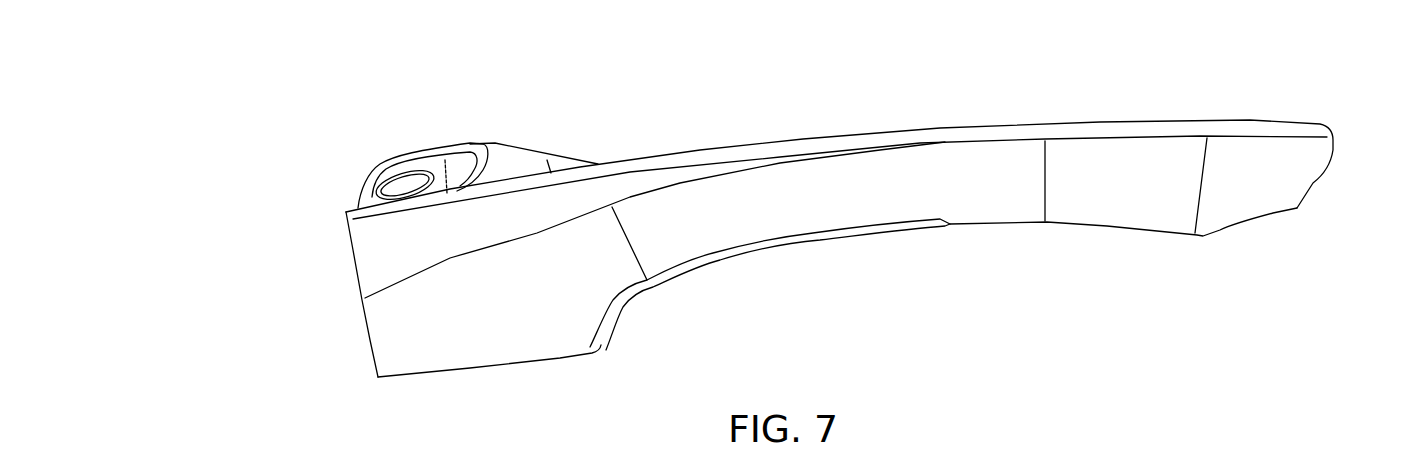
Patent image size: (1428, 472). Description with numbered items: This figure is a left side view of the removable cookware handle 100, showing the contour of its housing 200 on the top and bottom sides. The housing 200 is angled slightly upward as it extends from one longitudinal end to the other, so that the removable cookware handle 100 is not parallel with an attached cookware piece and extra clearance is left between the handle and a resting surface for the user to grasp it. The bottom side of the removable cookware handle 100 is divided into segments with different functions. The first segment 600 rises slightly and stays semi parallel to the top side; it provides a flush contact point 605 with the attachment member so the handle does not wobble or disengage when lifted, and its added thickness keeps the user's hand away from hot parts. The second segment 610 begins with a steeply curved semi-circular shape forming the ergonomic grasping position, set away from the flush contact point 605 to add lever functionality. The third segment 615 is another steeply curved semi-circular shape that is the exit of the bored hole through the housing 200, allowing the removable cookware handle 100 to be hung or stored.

The removable cookware handle 100 is at (833, 220).
The housing 200 is at (803, 139).
The first segment 600 is at (600, 373).
The flush contact point 605 is at (352, 267).
The second segment 610 is at (1193, 281).
The third segment 615 is at (1387, 192).